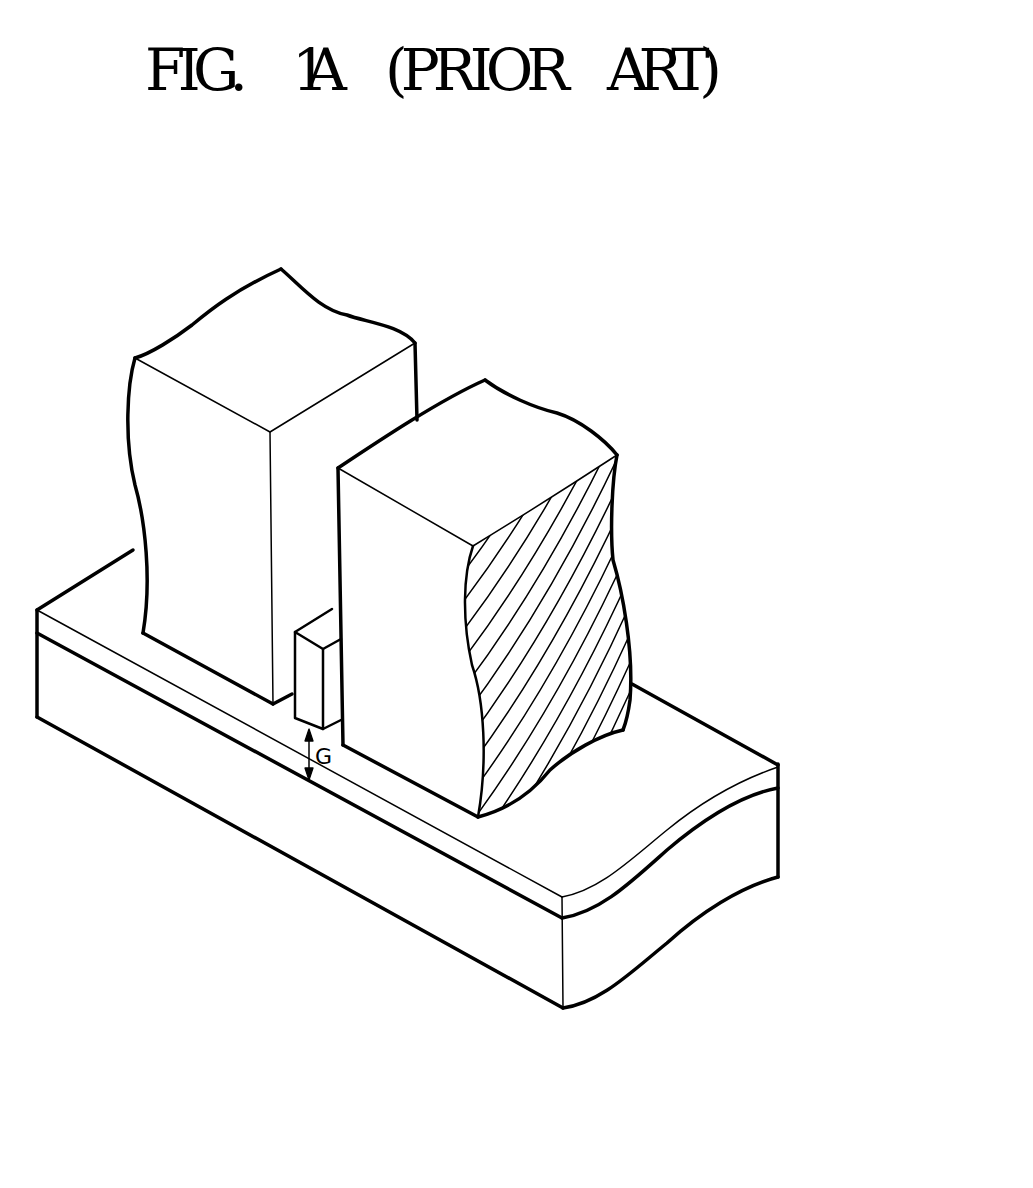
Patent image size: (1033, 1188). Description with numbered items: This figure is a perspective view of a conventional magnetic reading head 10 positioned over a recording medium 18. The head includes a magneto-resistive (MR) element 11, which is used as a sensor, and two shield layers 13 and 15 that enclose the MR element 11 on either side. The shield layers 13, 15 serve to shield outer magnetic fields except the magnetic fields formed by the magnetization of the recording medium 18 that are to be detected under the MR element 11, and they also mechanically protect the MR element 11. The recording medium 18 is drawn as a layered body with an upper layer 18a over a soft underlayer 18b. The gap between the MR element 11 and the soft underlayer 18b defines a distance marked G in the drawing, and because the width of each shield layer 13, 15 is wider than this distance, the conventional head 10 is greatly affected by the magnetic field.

The magnetic head 10 is at (672, 517).
The magneto-resistive (MR) element 11 is at (303, 677).
The shield layer 13 is at (352, 316).
The shield layer 15 is at (540, 423).
The recording medium 18 is at (765, 712).
The upper substrate layer 18a is at (768, 780).
The soft underlayer 18b is at (768, 837).